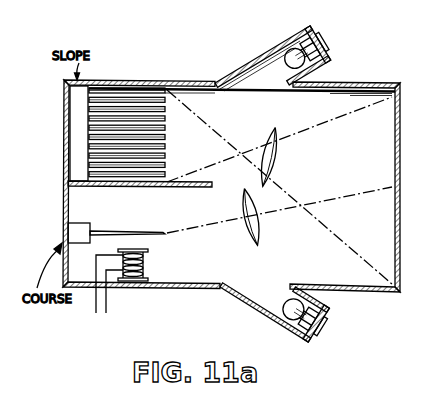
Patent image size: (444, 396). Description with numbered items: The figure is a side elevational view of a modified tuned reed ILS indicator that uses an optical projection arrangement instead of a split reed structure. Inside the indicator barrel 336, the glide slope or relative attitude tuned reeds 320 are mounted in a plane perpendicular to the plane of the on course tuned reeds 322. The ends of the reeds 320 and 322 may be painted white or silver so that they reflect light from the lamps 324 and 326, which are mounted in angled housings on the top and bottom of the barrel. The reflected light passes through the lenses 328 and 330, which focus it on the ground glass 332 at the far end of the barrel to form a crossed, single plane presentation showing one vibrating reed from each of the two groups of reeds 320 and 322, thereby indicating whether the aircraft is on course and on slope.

The glide slope tuned reeds 320 is at (120, 88).
The on course tuned reeds 322 is at (146, 222).
The lamp 324 is at (284, 59).
The lamp 326 is at (290, 309).
The lens 328 is at (273, 130).
The lens 330 is at (259, 243).
The ground glass 332 is at (401, 132).
The indicator barrel 336 is at (168, 81).